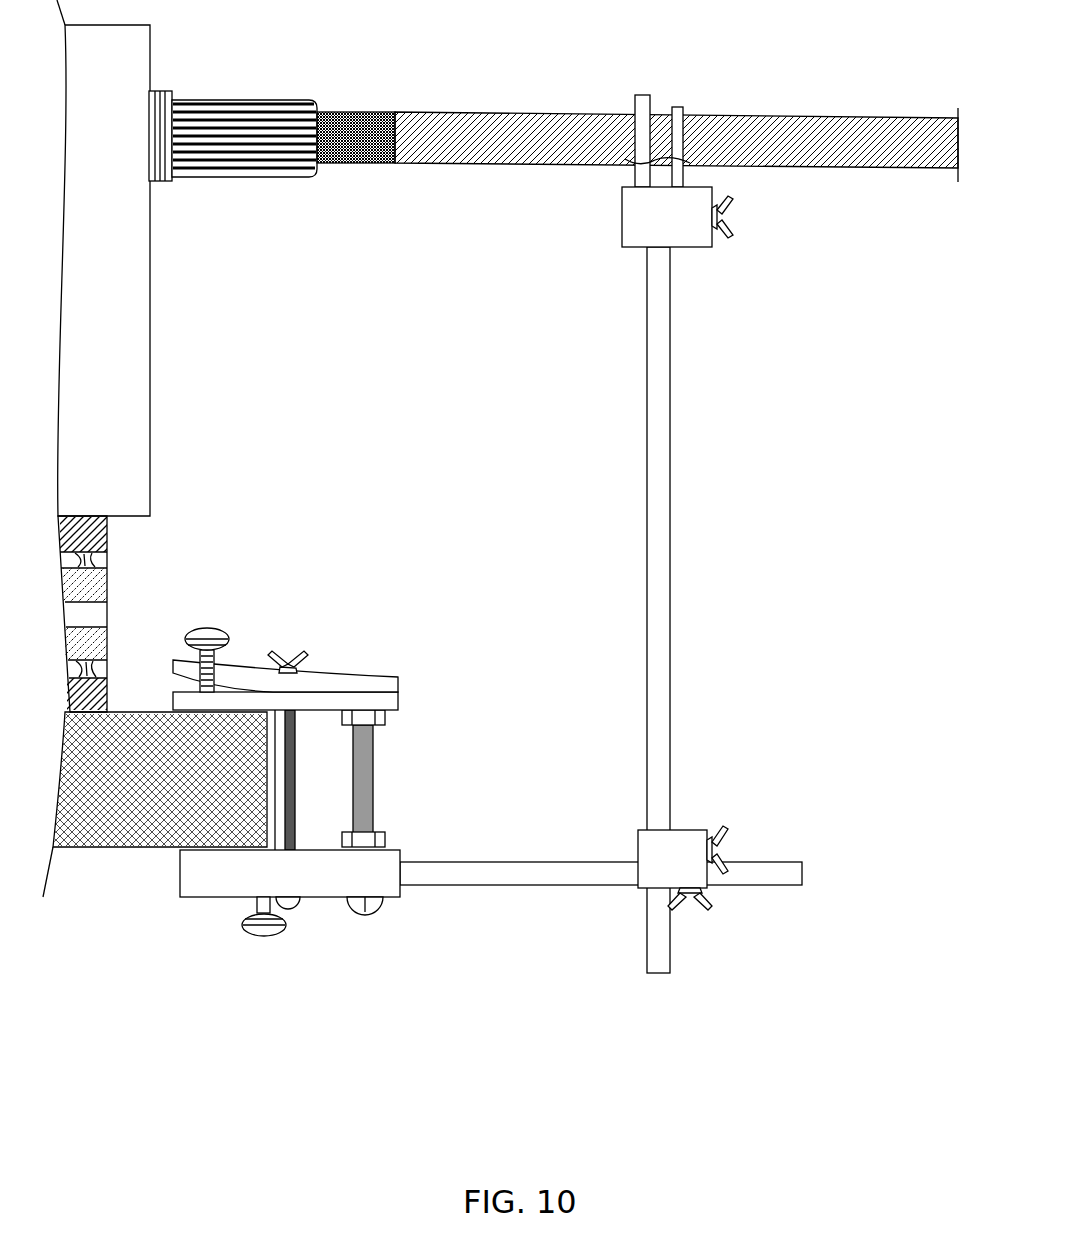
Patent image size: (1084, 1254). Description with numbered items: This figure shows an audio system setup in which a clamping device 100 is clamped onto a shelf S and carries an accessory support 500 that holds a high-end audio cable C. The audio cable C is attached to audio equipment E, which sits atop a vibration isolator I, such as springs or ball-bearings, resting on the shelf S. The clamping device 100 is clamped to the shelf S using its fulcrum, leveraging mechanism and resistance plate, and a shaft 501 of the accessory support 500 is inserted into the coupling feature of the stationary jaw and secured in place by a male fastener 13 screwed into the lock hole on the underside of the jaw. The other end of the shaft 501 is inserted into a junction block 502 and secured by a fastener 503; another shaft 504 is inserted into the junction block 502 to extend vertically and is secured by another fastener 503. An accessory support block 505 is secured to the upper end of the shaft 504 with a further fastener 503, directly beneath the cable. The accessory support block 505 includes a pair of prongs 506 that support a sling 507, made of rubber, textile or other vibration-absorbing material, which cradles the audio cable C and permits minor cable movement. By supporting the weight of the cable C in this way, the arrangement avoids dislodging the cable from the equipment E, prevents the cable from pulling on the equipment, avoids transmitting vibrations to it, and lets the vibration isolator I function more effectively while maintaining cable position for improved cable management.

The accessory support 500 is at (572, 971).
The shaft 501 is at (445, 868).
The junction block 502 is at (648, 843).
The fastener 503 is at (725, 235).
The shaft 504 is at (658, 617).
The accessory support block 505 is at (640, 237).
The prongs 506 is at (640, 110).
The sling 507 is at (635, 165).
The clamping device 100 is at (358, 642).
The male fastener 13 is at (265, 930).
The audio cable C is at (835, 125).
The audio equipment E is at (142, 283).
The vibration isolator I is at (100, 590).
The shelf S is at (80, 848).